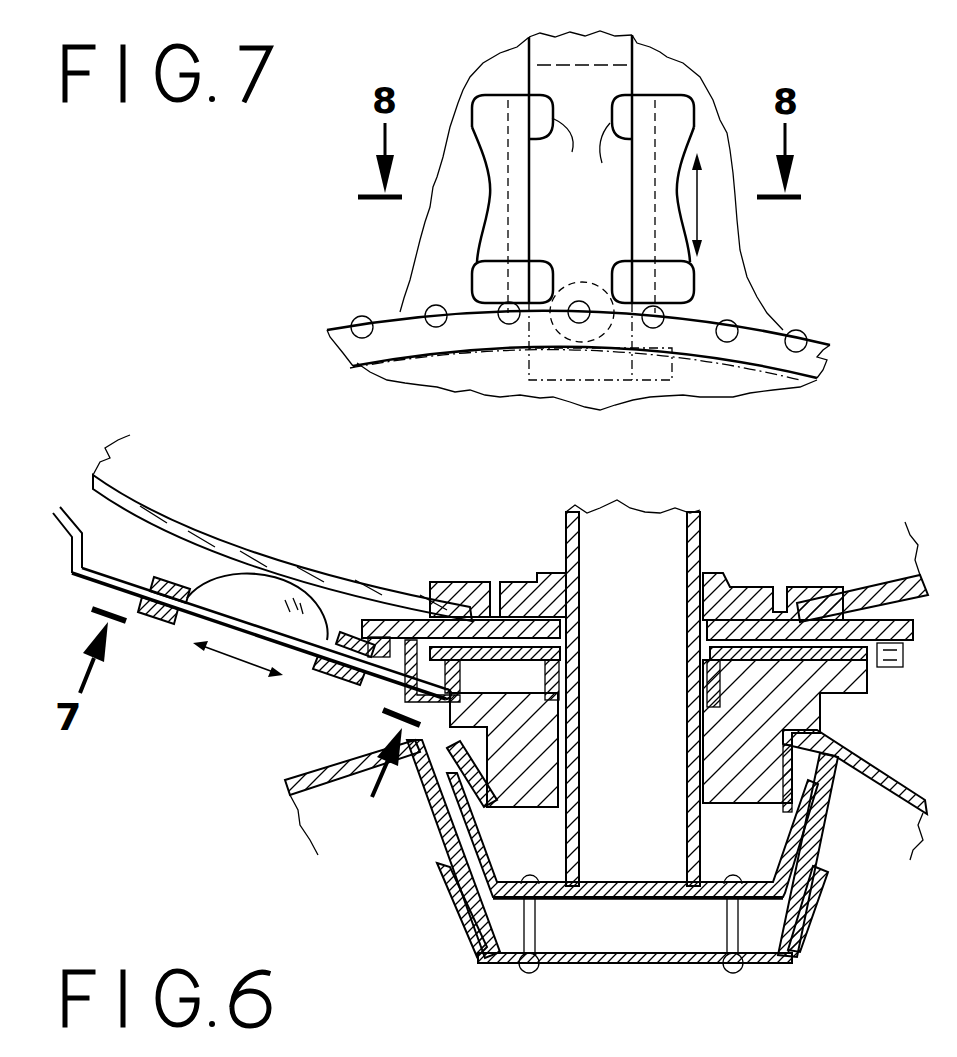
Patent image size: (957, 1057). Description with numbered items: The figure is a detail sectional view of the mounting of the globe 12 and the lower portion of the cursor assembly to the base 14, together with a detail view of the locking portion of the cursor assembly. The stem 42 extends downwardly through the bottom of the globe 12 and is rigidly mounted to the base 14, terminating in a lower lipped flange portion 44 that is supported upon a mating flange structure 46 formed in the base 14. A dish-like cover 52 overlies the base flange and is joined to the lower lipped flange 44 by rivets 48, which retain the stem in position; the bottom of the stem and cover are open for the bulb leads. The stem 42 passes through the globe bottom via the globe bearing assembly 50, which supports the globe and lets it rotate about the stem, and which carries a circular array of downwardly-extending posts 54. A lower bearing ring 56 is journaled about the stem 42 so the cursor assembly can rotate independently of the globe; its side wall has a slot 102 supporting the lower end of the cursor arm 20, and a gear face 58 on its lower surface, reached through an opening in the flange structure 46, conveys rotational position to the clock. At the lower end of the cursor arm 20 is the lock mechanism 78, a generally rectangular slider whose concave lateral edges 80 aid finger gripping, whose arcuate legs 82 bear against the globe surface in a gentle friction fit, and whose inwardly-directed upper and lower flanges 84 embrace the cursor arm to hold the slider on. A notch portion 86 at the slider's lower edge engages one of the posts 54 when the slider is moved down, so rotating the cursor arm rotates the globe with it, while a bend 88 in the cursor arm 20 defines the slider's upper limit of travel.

In FIG. 6, the globe 12 is at (222, 542).
In FIG. 6, the base 14 is at (883, 777).
In FIG. 7, the cursor arm 20 is at (590, 38).
In FIG. 6, the cursor arm 20 is at (57, 504).
In FIG. 6, the stem 42 is at (703, 527).
In FIG. 6, the lower lipped flange portion 44 is at (780, 847).
In FIG. 6, the flange structure 46 is at (443, 807).
In FIG. 6, the rivets 48 is at (527, 920).
In FIG. 7, the globe bearing assembly 50 is at (826, 360).
In FIG. 6, the globe bearing assembly 50 is at (753, 598).
In FIG. 6, the dish-like cover 52 is at (700, 962).
In FIG. 7, the posts 54 is at (497, 320).
In FIG. 6, the posts 54 is at (882, 612).
In FIG. 6, the lower bearing ring 56 is at (817, 730).
In FIG. 6, the gear face 58 is at (440, 777).
In FIG. 7, the lock mechanism 78 is at (703, 78).
In FIG. 7, the lateral edges 80 is at (478, 208).
In FIG. 6, the legs 82 is at (258, 600).
In FIG. 7, the upper and lower flanges 84 is at (607, 242).
In FIG. 7, the notch portion 86 is at (553, 342).
In FIG. 6, the bend 88 is at (83, 545).
In FIG. 6, the slot 102 is at (395, 685).